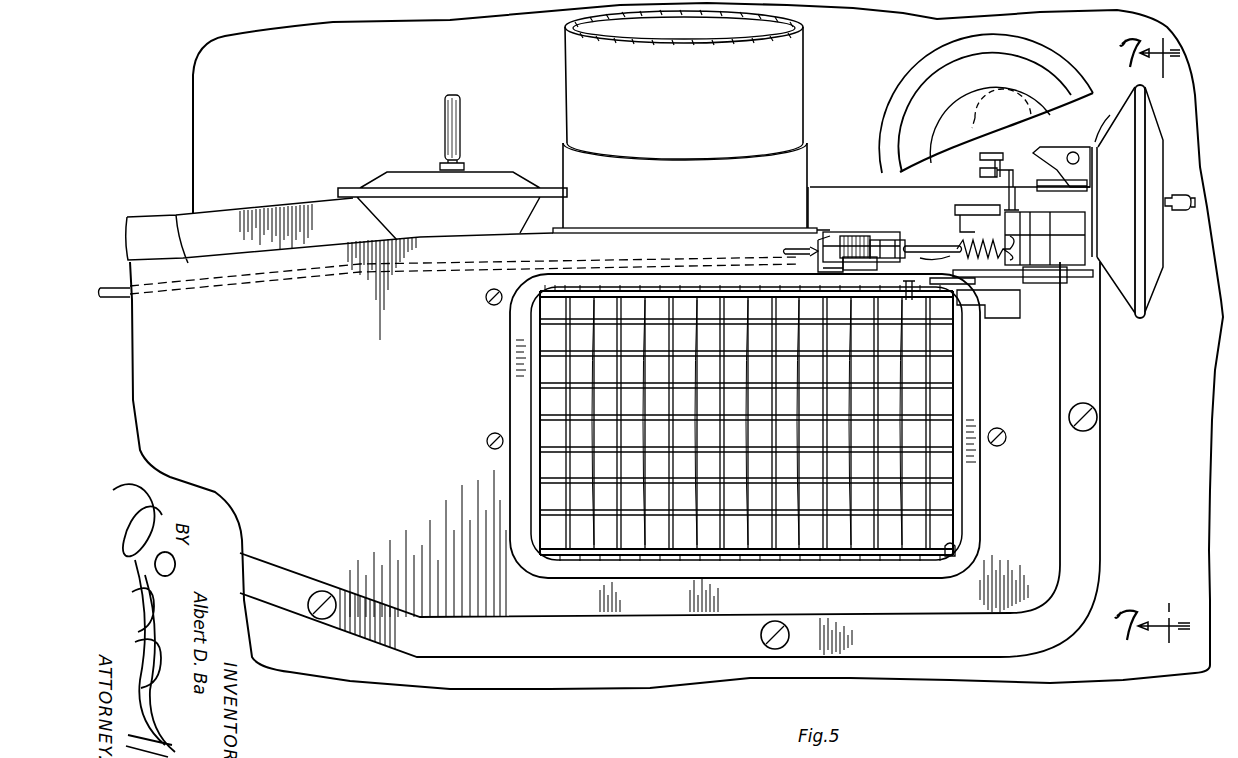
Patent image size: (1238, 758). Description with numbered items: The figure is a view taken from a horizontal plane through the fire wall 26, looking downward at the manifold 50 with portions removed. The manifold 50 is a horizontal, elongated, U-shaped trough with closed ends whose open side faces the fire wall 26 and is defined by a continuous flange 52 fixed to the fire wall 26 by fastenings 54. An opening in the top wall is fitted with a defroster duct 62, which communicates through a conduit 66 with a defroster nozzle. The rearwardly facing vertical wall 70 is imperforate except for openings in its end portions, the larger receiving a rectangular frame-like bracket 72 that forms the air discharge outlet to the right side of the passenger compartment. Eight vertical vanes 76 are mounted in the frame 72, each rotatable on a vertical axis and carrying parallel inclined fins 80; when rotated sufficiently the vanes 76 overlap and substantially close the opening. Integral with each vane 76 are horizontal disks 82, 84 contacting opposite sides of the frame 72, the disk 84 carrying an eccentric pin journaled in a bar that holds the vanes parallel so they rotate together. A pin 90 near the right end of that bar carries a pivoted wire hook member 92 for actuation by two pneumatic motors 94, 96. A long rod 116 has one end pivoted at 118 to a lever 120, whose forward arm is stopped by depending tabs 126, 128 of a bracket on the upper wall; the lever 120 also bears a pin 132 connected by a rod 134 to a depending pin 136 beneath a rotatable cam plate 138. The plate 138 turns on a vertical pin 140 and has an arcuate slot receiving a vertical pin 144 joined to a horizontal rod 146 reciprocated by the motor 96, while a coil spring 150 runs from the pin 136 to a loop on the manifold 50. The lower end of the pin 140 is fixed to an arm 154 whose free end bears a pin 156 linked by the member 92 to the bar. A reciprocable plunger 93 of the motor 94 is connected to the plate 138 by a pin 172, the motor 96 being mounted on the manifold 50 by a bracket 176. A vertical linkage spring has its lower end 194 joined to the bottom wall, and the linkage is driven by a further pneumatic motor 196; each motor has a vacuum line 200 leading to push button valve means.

The fire wall 26 is at (213, 133).
The manifold 50 is at (478, 267).
The continuous flange 52 is at (1093, 500).
The fastenings 54 is at (1097, 420).
The defroster duct 62 is at (797, 178).
The conduit 66 is at (778, 73).
The rearwardly facing vertical wall 70 is at (302, 590).
The frame-like bracket 72 is at (968, 490).
The vanes 76 is at (930, 397).
The fins 80 is at (920, 372).
The horizontal disk 82 is at (950, 555).
The horizontal disk 84 is at (955, 300).
The pin 90 is at (895, 300).
The wire hook member 92 is at (1030, 285).
The reciprocable plunger 93 is at (1030, 192).
The pneumatic motor 94 is at (1147, 142).
The pneumatic motor 96 is at (949, 59).
The long rod 116 is at (115, 300).
The pivot 118 is at (800, 250).
The lever 120 is at (887, 245).
The tab 126 is at (833, 238).
The tab 128 is at (925, 253).
The pin 132 is at (818, 240).
The rod 134 is at (852, 240).
The depending pin 136 is at (985, 232).
The rotatable cam plate 138 is at (1030, 154).
The vertical pin 140 is at (1035, 252).
The vertical pin 144 is at (978, 170).
The horizontal rod 146 is at (988, 152).
The coil spring 150 is at (950, 240).
The arm 154 is at (1100, 272).
The pin 156 is at (1062, 280).
The pin 172 is at (1018, 180).
The bracket 176 is at (1050, 119).
The spring lower end 194 is at (1115, 118).
The pneumatic motor 196 is at (408, 185).
The vacuum line 200 is at (448, 150).